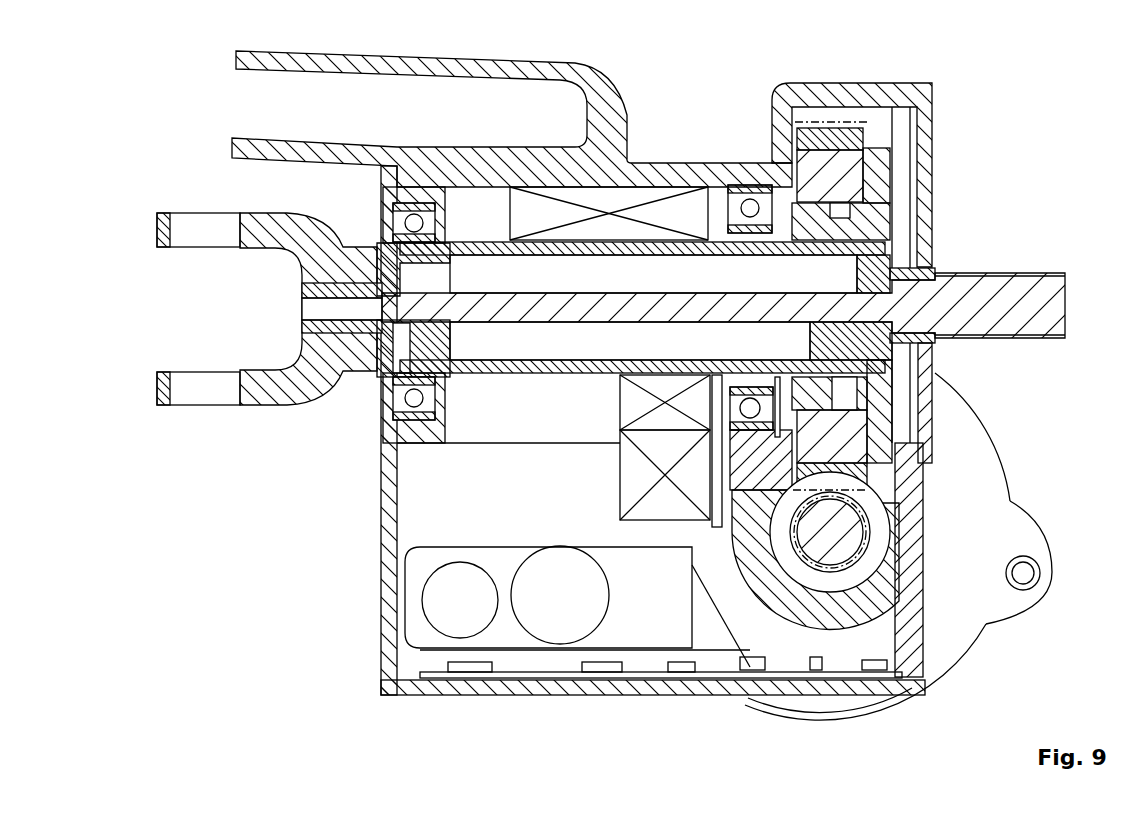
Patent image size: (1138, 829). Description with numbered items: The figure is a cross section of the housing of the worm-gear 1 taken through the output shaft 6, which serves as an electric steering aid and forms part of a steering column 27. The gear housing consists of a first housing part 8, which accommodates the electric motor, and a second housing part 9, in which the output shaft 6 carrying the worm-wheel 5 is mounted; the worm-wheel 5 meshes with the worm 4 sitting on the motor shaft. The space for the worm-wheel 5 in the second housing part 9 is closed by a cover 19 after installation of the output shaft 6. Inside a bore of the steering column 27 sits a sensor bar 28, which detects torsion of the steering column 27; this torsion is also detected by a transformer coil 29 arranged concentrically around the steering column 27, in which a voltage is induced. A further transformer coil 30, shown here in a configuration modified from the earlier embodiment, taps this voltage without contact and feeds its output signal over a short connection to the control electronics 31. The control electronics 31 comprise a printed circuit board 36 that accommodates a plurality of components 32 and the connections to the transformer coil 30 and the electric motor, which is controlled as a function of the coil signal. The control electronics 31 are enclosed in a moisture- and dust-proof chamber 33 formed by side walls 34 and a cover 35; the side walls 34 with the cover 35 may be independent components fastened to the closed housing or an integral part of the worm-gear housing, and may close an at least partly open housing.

The worm-gear 1 is at (947, 455).
The worm 4 is at (843, 538).
The worm-wheel 5 is at (850, 142).
The output shaft 6 is at (828, 272).
The first housing part 8 is at (915, 533).
The second housing part 9 is at (622, 105).
The cover 19 is at (925, 178).
The steering column 27 is at (262, 392).
The sensor bar 28 is at (443, 300).
The transformer coil 29 is at (683, 205).
The further transformer coil 30 is at (630, 483).
The control electronics 31 is at (827, 653).
The components 32 is at (693, 693).
The chamber 33 is at (460, 498).
The side walls 34 is at (385, 570).
The cover 35 is at (540, 692).
The printed circuit board 36 is at (617, 692).